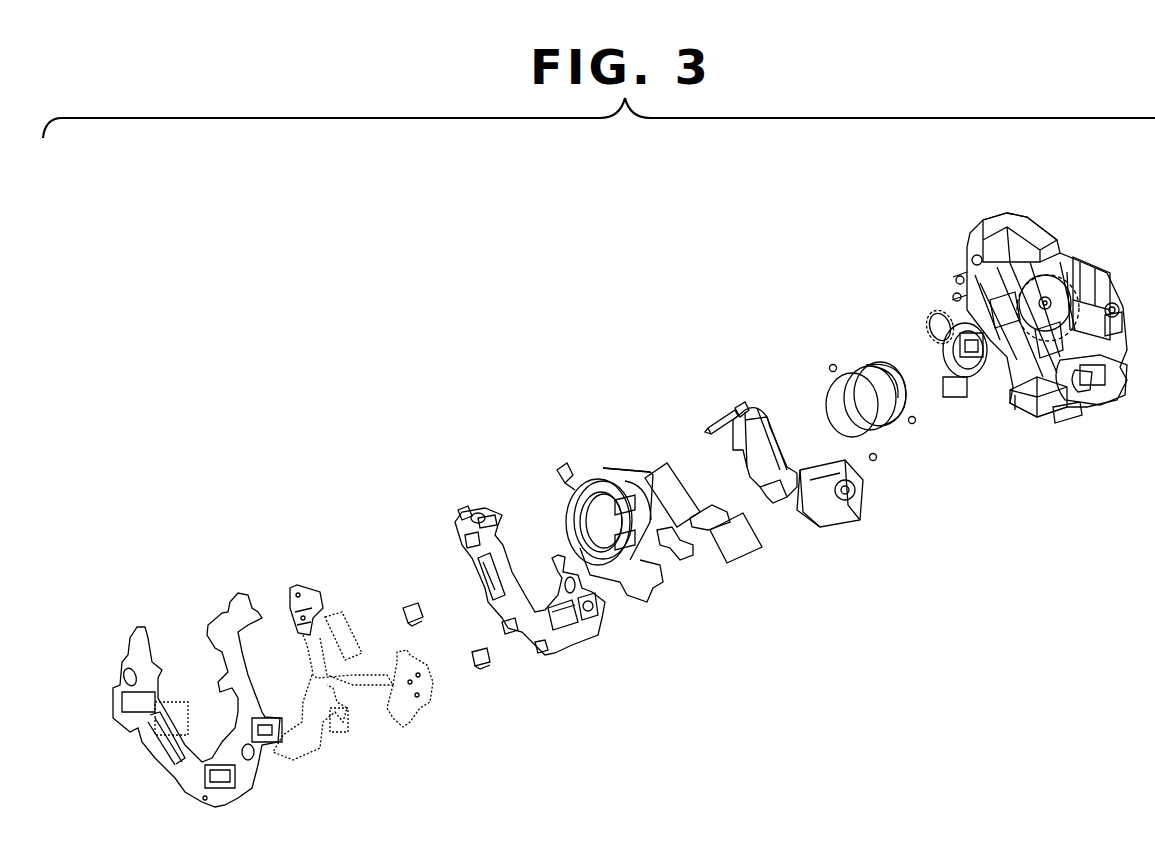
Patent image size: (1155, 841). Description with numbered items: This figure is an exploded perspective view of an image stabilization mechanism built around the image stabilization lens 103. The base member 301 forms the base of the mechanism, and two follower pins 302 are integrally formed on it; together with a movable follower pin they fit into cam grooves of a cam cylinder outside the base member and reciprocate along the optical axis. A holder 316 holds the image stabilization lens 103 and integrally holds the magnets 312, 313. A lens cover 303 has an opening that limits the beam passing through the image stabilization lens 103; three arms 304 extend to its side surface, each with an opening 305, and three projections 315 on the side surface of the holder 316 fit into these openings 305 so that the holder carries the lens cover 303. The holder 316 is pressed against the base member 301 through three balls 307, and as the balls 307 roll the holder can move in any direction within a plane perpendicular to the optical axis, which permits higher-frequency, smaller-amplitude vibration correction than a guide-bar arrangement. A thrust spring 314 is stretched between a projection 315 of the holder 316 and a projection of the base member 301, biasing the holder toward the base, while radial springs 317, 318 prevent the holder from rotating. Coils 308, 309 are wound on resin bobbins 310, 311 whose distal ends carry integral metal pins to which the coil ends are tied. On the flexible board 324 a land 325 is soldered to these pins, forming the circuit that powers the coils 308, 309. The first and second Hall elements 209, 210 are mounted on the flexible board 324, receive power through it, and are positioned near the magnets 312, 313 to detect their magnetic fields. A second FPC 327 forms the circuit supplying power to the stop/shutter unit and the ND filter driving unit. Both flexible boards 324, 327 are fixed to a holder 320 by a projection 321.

The image stabilization lens 103 is at (848, 400).
The first Hall element 209 is at (410, 607).
The second Hall element 210 is at (483, 668).
The base member 301 is at (977, 240).
The follower pins 302 is at (1110, 302).
The lens cover 303 is at (928, 322).
The arms 304 is at (963, 350).
The openings 305 is at (975, 352).
The balls 307 is at (832, 365).
The coil 308 is at (757, 405).
The coil 309 is at (848, 498).
The resin bobbin 310 is at (740, 415).
The resin bobbin 311 is at (820, 512).
The magnet 312 is at (678, 478).
The magnet 313 is at (740, 540).
The thrust spring 314 is at (710, 522).
The projections 315 is at (627, 483).
The holder 316 is at (613, 470).
The radial spring 317 is at (673, 545).
The radial spring 318 is at (560, 468).
The holder 320 is at (465, 510).
The projection 321 is at (460, 513).
The flexible board (FPC) 324 is at (298, 590).
The land 325 is at (313, 625).
The FPC 327 is at (220, 620).